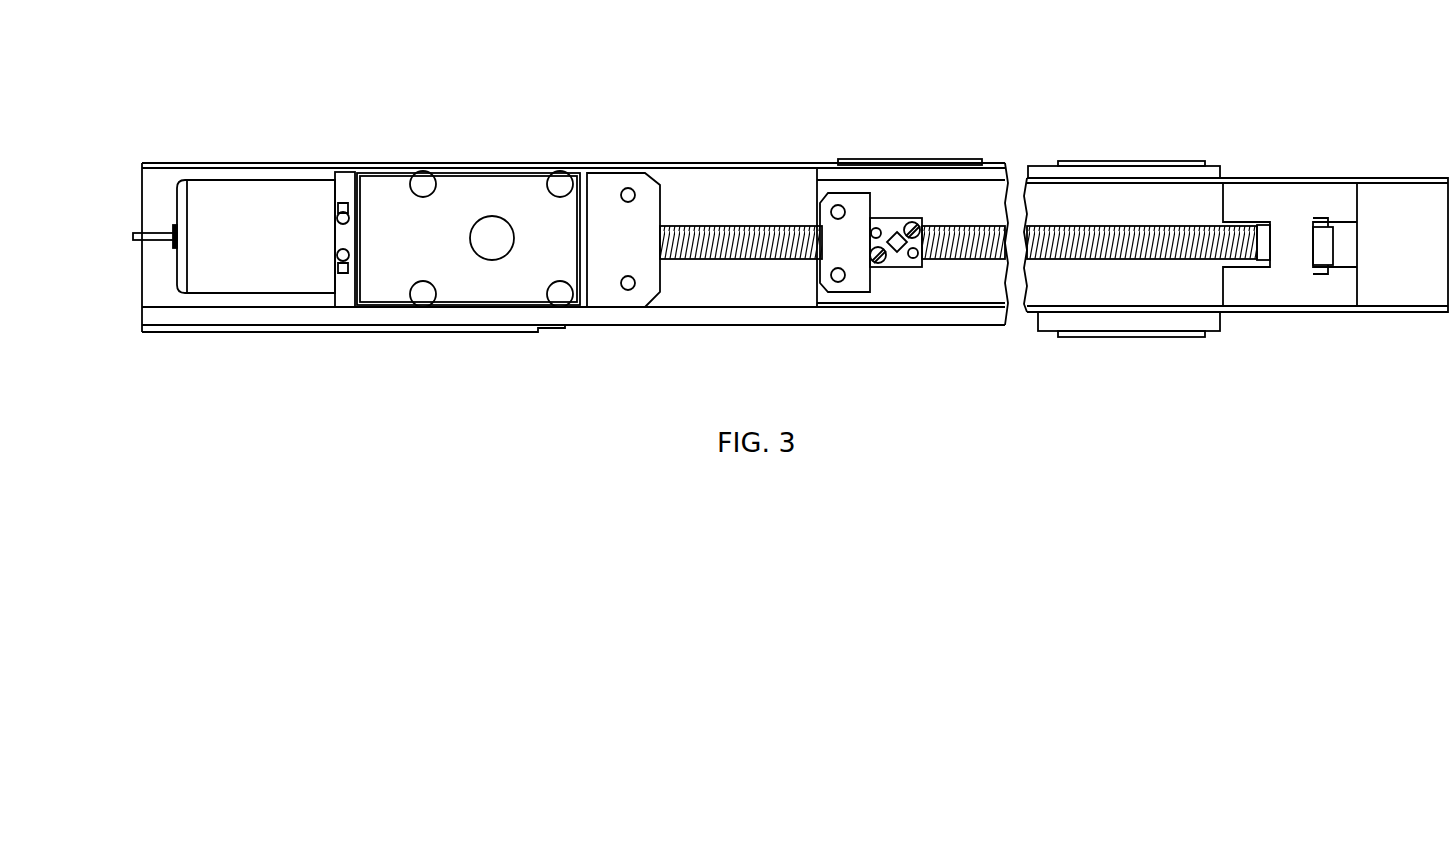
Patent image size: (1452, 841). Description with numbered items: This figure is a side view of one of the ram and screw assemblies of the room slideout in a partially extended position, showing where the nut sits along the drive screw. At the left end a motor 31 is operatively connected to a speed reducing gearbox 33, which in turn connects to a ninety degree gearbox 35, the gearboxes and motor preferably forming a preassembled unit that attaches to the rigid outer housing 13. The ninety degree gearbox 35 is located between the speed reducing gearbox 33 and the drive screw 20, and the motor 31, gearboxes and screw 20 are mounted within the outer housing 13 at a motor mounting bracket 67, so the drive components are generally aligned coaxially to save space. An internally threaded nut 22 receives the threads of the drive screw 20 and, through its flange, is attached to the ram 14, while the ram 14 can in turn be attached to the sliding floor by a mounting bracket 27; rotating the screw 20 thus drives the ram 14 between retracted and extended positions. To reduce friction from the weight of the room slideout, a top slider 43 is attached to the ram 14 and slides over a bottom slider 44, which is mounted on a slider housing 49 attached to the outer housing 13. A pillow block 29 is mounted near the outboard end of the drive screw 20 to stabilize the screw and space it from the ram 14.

The outer housing 13 is at (995, 165).
The ram 14 is at (1250, 180).
The drive screw 20 is at (704, 242).
The nut 22 is at (892, 265).
The mounting bracket 27 is at (857, 203).
The pillow block 29 is at (1278, 193).
The motor 31 is at (282, 188).
The speed reducing gearbox 33 is at (409, 112).
The 90 degree gearbox 35 is at (518, 112).
The top slider 43 is at (907, 173).
The bottom slider 44 is at (1187, 313).
The slider housing 49 is at (1077, 327).
The motor mounting bracket 67 is at (605, 176).